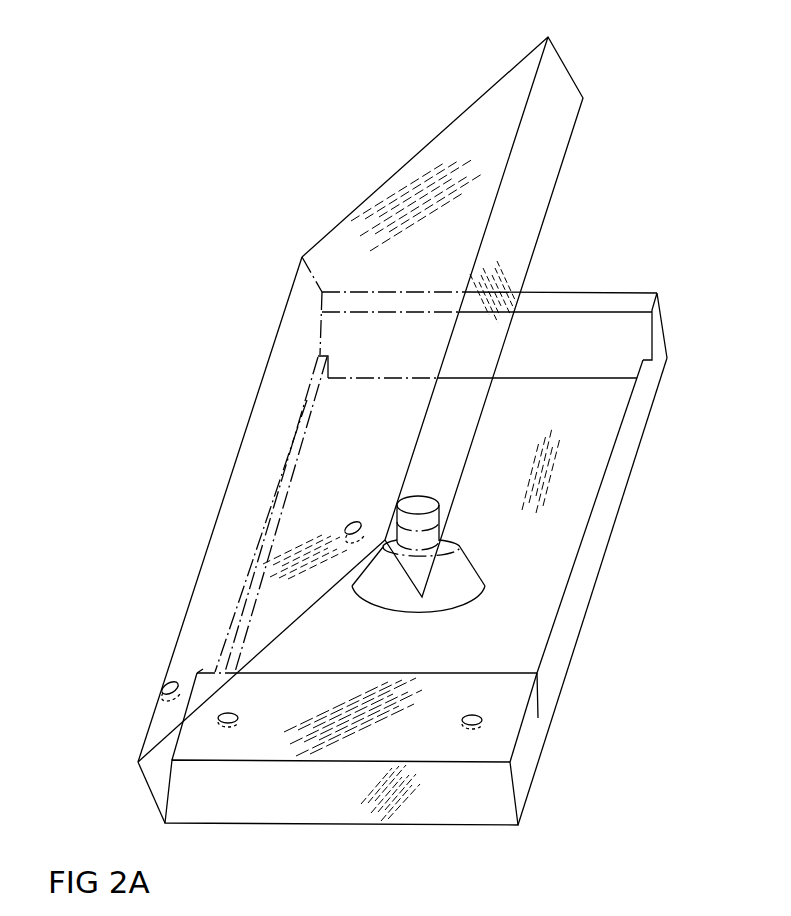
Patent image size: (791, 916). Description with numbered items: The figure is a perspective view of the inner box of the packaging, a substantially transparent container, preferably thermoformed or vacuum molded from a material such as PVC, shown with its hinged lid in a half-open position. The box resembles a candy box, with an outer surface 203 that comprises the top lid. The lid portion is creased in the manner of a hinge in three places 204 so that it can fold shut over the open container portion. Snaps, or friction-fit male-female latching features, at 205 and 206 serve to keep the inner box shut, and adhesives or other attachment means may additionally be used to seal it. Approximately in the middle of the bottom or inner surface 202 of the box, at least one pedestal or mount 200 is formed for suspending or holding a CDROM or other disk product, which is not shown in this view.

The pedestal or mount 200 is at (455, 600).
The bottom or inner surface 202 is at (611, 421).
The outer surface 203 is at (196, 598).
The hinge creases 204 is at (550, 14).
The latching feature 205 is at (355, 522).
The latching feature 206 is at (483, 716).